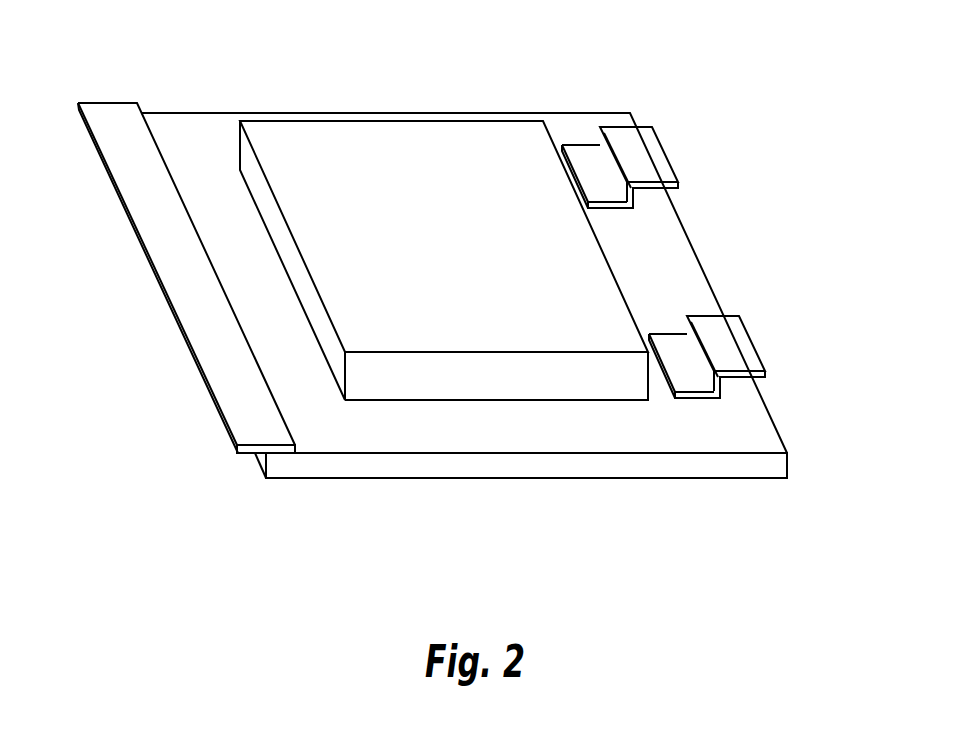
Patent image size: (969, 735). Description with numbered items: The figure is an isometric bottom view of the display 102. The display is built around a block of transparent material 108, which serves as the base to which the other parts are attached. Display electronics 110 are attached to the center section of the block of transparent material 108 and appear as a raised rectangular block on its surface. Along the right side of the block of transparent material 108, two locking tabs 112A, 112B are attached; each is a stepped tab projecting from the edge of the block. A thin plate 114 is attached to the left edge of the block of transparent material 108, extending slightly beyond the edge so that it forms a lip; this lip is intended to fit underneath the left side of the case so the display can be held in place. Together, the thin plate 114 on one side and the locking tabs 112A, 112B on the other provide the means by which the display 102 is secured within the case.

The display 102 is at (482, 62).
The block of transparent material 108 is at (657, 479).
The display electronics 110 is at (459, 247).
The locking tab 112A is at (665, 156).
The locking tab 112B is at (753, 344).
The thin plate 114 is at (216, 408).